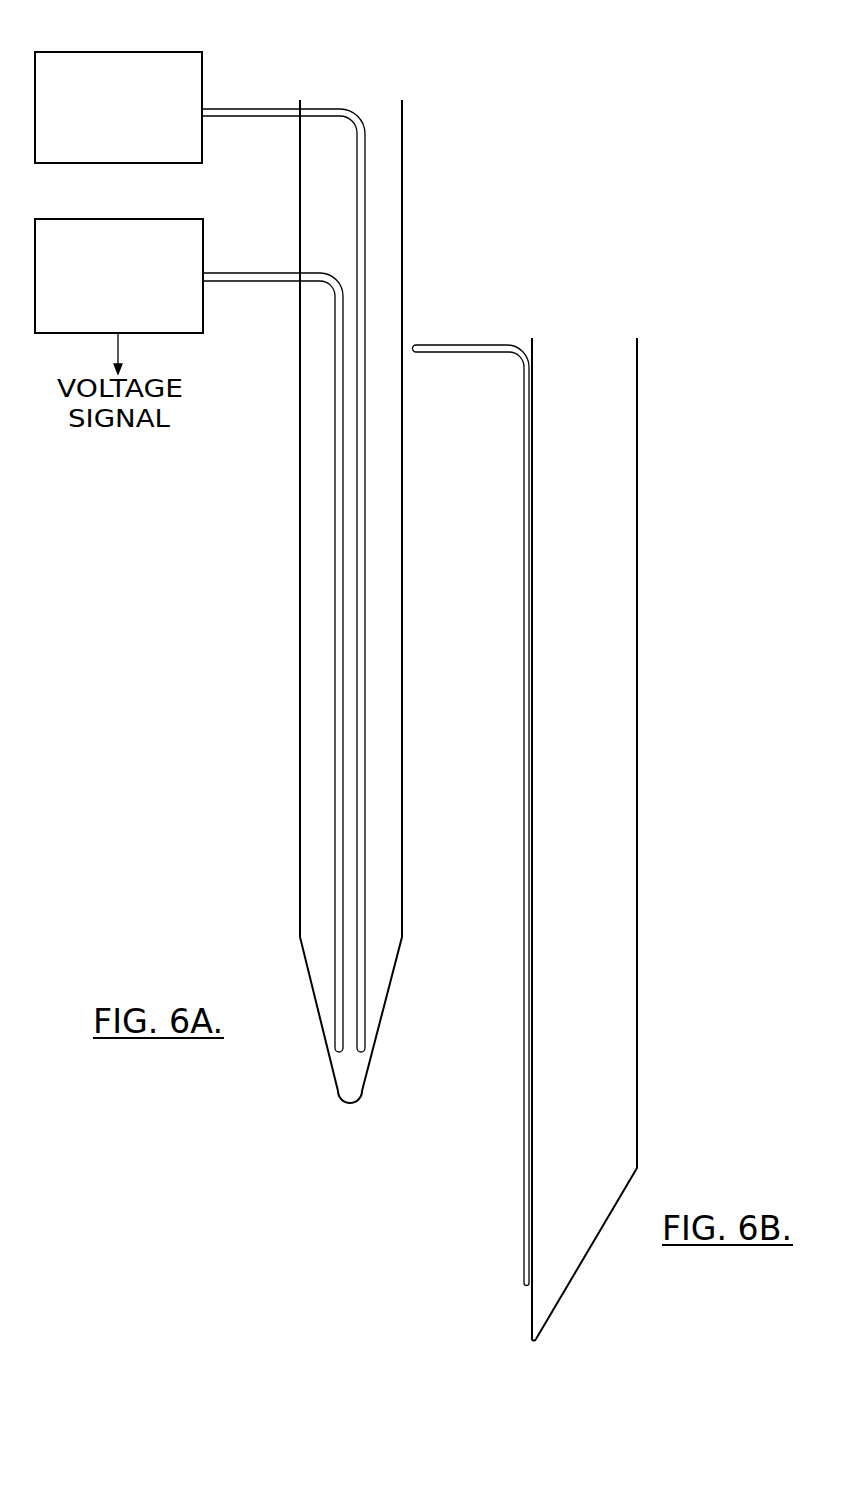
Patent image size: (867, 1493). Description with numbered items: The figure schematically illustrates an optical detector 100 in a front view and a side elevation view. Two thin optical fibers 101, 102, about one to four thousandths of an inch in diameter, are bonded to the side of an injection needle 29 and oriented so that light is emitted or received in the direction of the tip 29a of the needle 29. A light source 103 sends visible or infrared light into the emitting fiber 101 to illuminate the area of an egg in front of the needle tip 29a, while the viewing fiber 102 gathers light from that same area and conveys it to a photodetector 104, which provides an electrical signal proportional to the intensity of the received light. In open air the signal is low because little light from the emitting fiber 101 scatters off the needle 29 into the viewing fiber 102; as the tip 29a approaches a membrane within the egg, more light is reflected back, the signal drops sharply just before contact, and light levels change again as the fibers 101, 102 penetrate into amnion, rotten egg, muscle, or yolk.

In FIG. 6A, the optical detector 100 is at (287, 566).
In FIG. 6B, the optical detector 100 is at (586, 839).
In FIG. 6A, the injection needle 29 is at (403, 720).
In FIG. 6B, the injection needle 29 is at (637, 905).
In FIG. 6A, the tip 29a is at (357, 1082).
In FIG. 6B, the tip 29a is at (538, 1322).
In FIG. 6A, the emitting fiber 101 is at (362, 827).
In FIG. 6A, the viewing fiber 102 is at (340, 723).
In FIG. 6A, the light source 103 is at (172, 52).
In FIG. 6A, the photodetector 104 is at (172, 333).